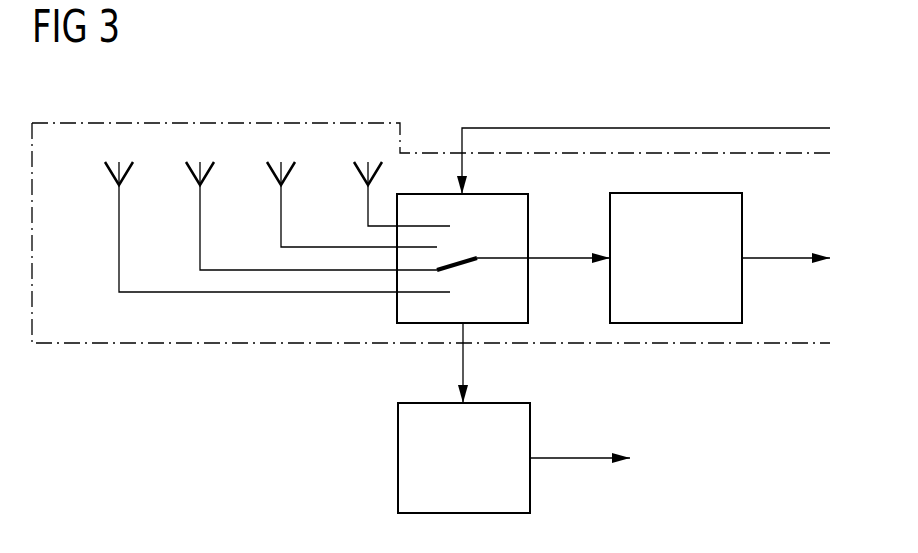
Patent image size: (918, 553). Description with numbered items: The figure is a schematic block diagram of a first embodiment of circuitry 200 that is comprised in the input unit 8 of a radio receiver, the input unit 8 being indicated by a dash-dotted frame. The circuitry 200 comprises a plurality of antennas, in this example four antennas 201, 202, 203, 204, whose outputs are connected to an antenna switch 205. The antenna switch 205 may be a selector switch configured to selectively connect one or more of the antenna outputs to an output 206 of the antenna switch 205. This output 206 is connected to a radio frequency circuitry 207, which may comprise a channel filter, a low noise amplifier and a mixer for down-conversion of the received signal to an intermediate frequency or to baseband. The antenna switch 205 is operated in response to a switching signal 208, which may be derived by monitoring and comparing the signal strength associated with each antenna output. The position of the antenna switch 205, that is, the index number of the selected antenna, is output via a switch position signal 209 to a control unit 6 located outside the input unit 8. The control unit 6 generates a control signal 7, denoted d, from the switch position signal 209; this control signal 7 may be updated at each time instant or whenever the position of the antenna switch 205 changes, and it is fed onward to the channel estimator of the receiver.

The circuitry 200 is at (741, 74).
The input unit 8 is at (267, 123).
The antenna 201 is at (119, 260).
The antenna 202 is at (200, 215).
The antenna 203 is at (281, 227).
The antenna 204 is at (368, 200).
The antenna switch 205 is at (397, 305).
The output of the antenna switch 206 is at (536, 258).
The radio frequency circuitry 207 is at (742, 293).
The switching signal 208 is at (610, 128).
The switch position signal 209 is at (463, 363).
The control unit 6 is at (398, 445).
The control signal 7 is at (566, 462).